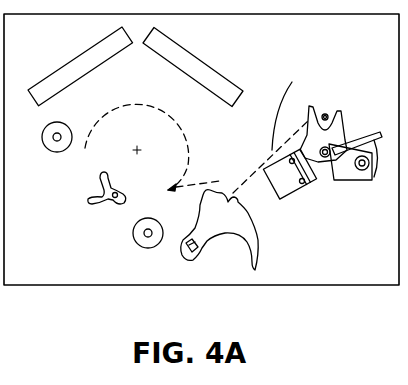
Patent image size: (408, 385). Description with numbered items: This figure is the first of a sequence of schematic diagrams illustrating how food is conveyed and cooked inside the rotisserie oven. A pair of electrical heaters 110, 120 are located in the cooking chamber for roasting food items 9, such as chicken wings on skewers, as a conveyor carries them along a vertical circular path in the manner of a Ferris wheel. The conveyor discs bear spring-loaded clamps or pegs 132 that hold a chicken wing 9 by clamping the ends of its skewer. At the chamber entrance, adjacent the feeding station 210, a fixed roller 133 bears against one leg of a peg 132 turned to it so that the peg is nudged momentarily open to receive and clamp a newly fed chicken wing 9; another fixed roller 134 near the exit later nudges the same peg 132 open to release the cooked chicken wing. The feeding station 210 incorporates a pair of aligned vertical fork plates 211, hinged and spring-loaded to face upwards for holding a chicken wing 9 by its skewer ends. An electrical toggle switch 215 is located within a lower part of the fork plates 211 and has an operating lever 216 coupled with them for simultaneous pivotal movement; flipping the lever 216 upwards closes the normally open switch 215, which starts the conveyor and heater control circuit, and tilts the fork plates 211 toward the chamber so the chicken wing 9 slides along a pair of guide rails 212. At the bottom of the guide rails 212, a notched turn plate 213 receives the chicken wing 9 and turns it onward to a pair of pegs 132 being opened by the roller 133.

The electrical heater 120 is at (53, 70).
The electrical heater 110 is at (214, 63).
The fixed roller 134 is at (43, 152).
The fixed roller 133 is at (140, 242).
The peg 132 is at (97, 205).
The turn plate 213 is at (228, 232).
The guide rail 212 is at (295, 112).
The fork plate 211 is at (337, 111).
The food item 9 is at (328, 133).
The operating lever 216 is at (355, 167).
The electrical toggle switch 215 is at (291, 183).
The feeding station 210 is at (329, 225).